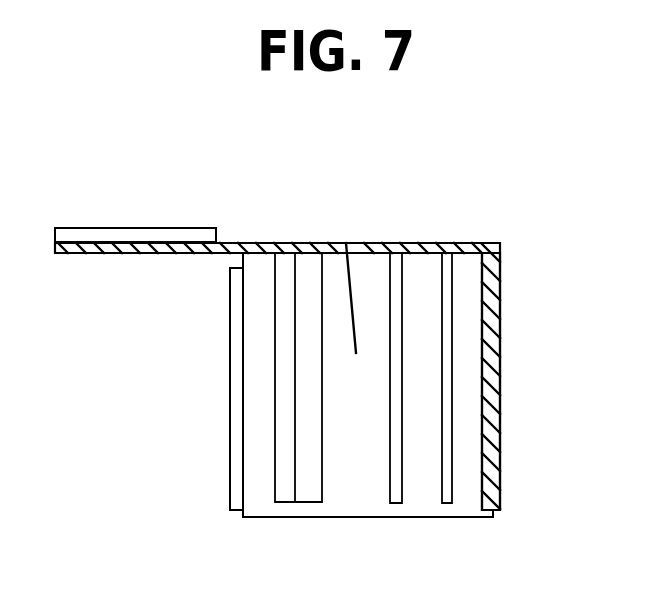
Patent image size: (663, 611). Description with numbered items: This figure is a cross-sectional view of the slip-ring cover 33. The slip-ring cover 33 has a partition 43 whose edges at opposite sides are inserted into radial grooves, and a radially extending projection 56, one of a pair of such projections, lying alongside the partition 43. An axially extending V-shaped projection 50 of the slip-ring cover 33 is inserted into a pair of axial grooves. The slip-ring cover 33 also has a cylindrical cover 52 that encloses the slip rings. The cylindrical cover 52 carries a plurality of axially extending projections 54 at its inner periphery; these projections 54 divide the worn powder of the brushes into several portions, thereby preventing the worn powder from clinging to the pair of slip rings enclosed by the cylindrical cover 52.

The slip-ring cover 33 is at (502, 321).
The partition 43 is at (191, 247).
The axially extending V-shaped projection 50 is at (230, 418).
The cylindrical cover 52 is at (501, 366).
The axially extending projections 54 is at (395, 258).
The radially extending projection 56 is at (118, 235).